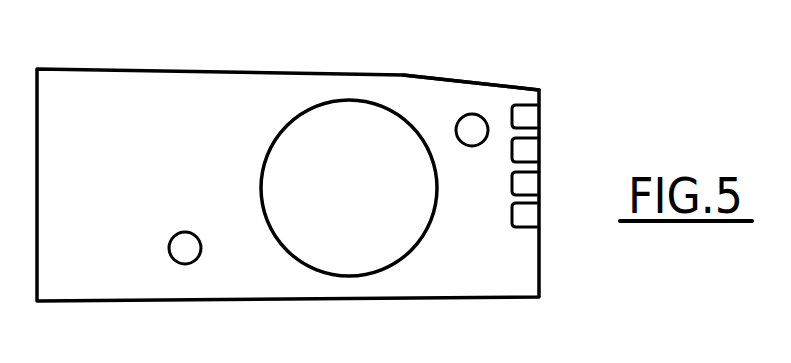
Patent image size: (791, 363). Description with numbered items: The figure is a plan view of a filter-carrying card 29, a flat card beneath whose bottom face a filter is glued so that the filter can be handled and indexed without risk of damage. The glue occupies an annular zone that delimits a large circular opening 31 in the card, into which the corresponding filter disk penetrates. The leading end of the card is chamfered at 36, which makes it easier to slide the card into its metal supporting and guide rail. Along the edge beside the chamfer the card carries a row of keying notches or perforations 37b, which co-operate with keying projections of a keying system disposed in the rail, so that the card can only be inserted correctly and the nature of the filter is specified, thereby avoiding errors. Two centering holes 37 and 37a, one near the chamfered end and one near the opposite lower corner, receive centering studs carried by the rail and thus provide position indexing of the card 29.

The filter-carrying card 29 is at (311, 66).
The circular opening 31 is at (378, 253).
The chamfer 36 is at (472, 80).
The centering hole 37 is at (480, 118).
The centering hole 37a is at (201, 247).
The keying notches 37b is at (532, 177).